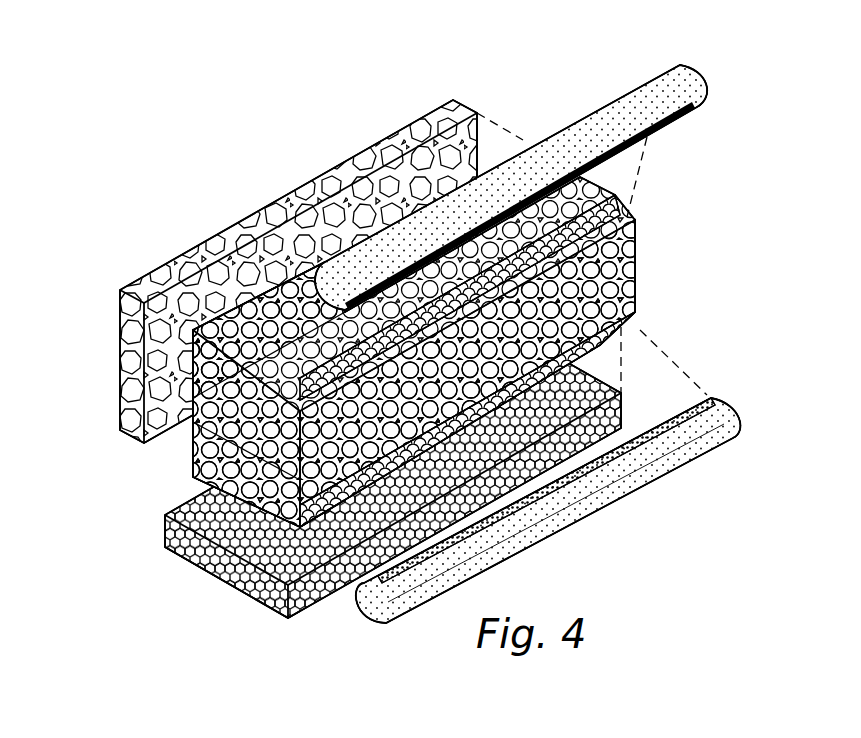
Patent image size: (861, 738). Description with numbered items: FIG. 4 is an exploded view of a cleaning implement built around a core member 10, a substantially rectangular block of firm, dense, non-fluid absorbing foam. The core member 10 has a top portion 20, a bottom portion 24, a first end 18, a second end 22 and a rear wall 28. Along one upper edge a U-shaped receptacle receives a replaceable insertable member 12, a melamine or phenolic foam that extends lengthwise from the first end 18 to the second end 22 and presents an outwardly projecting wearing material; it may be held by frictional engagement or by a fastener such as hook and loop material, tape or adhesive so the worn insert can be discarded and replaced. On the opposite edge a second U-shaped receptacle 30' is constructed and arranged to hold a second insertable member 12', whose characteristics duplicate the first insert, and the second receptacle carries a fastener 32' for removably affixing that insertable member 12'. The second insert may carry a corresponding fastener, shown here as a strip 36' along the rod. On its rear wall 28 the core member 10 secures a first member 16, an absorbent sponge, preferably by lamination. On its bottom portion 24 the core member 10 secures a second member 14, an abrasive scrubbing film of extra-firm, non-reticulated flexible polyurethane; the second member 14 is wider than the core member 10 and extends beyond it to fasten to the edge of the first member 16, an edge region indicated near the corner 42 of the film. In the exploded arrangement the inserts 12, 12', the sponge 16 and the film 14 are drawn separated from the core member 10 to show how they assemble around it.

The core member 10 is at (752, 253).
The insertable member 12 is at (539, 161).
The insertable member 12' is at (548, 510).
The second member 14 is at (211, 589).
The first member 16 is at (178, 247).
The first end 18 is at (243, 384).
The top portion 20 is at (255, 310).
The second end 22 is at (640, 232).
The bottom portion 24 is at (196, 477).
The rear wall 28 is at (193, 422).
The second U-shaped receptacle 30' is at (512, 361).
The fastener 32' is at (331, 586).
The strip on second rod 36' is at (607, 455).
The edge of base plate 42 is at (273, 615).